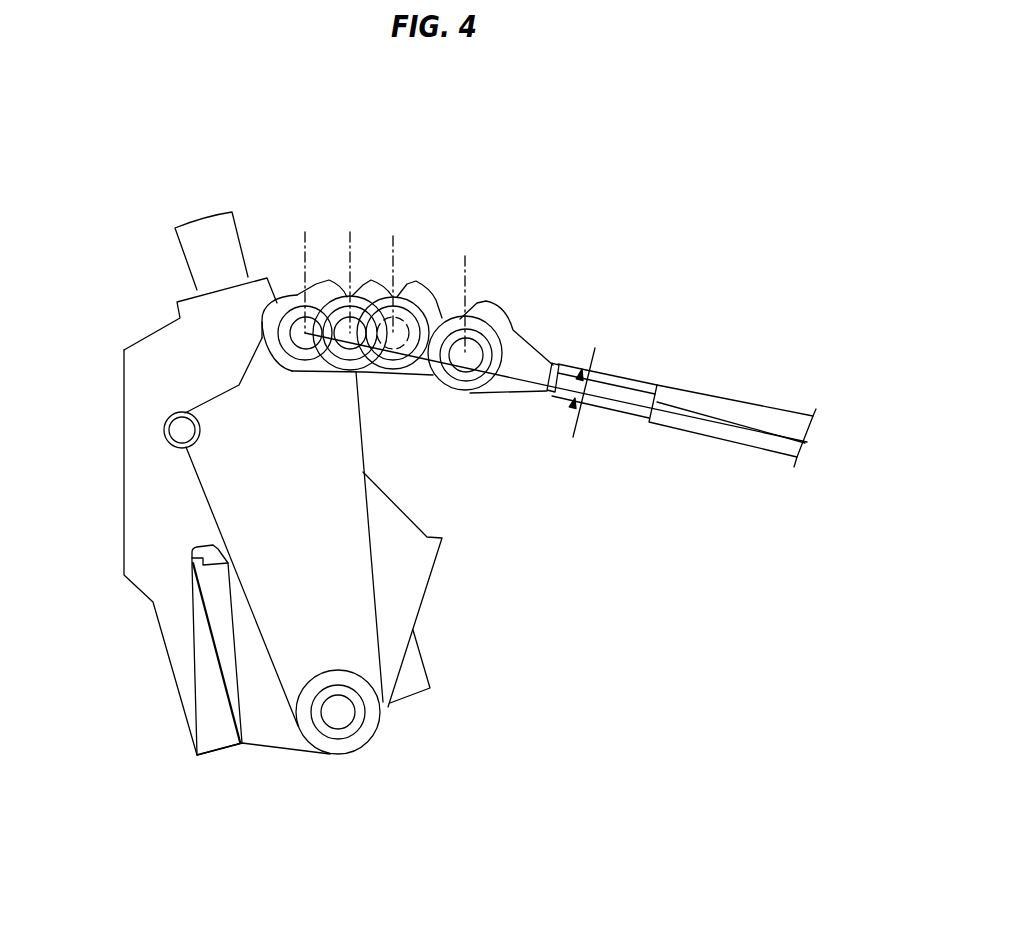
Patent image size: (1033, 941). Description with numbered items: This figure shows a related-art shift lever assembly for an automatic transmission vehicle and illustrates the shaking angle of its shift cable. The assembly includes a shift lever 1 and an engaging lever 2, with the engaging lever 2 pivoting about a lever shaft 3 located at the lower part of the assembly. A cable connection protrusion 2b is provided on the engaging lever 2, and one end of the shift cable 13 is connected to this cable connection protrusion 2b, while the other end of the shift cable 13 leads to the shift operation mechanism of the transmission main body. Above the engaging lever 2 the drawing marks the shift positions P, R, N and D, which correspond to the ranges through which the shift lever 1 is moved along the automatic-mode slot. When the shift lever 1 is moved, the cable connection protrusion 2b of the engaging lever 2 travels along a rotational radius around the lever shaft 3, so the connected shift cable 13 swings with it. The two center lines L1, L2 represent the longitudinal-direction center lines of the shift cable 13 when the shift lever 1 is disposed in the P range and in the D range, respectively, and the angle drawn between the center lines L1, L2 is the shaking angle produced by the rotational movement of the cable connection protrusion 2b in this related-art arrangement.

The shift lever 1 is at (143, 498).
The engaging lever 2 is at (262, 612).
The cable connection protrusion 2b is at (297, 333).
The lever shaft 3 is at (341, 716).
The shift cable 13 is at (737, 410).
The center line L1 is at (633, 391).
The center line L2 is at (611, 407).
The D range D is at (305, 223).
The neutral position N is at (350, 223).
The reverse position R is at (393, 225).
The P range P is at (462, 243).